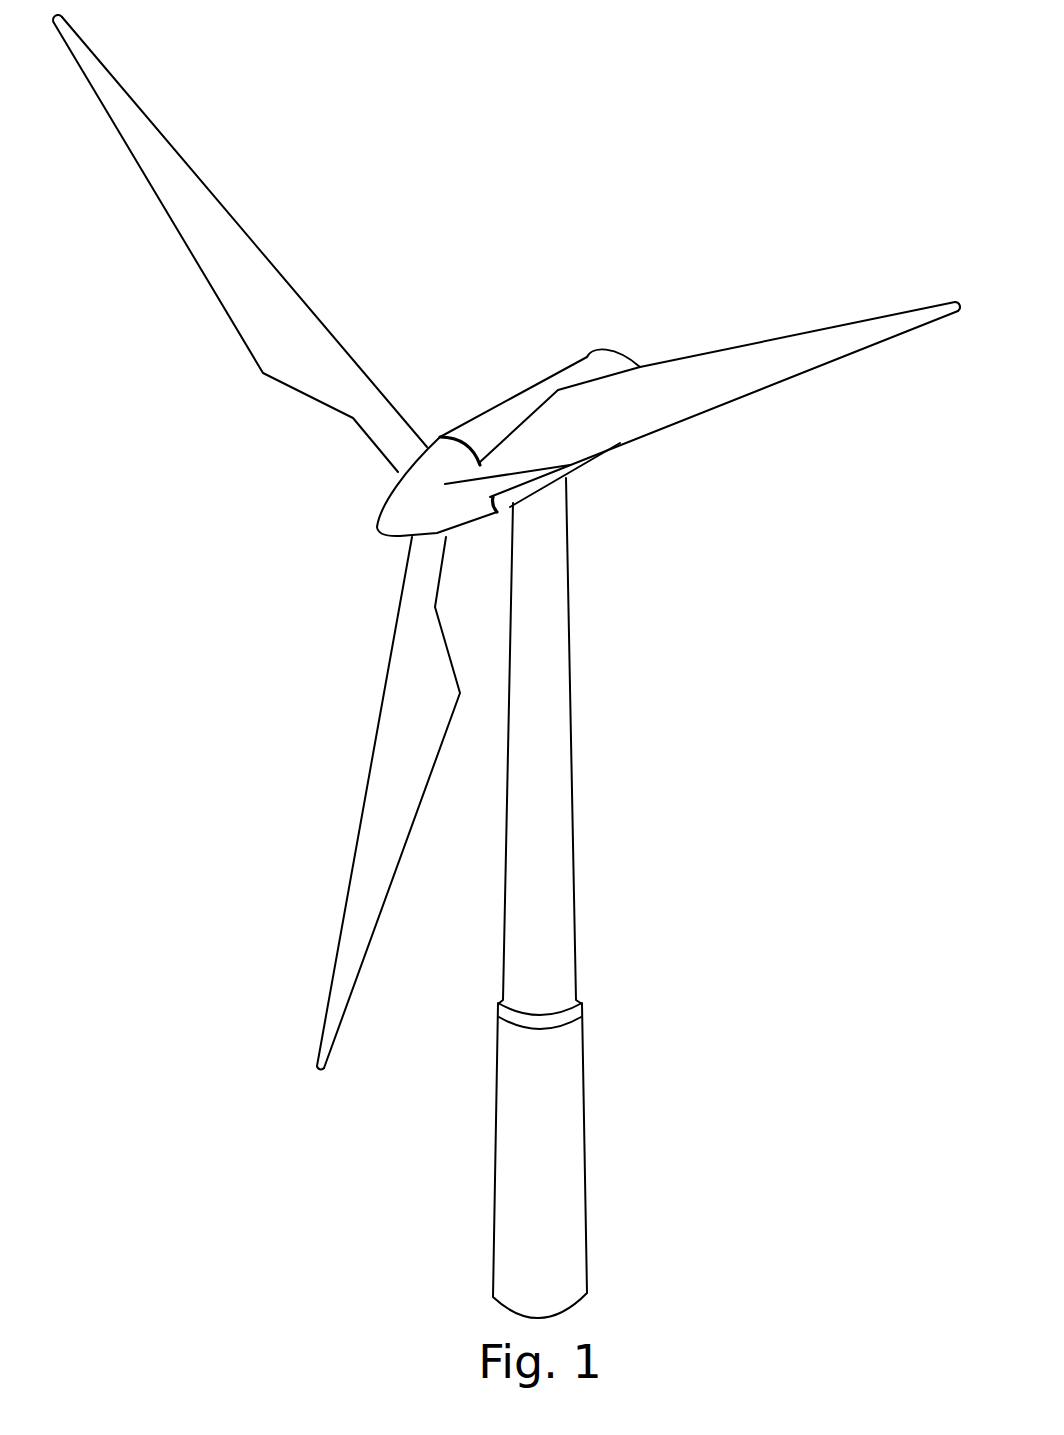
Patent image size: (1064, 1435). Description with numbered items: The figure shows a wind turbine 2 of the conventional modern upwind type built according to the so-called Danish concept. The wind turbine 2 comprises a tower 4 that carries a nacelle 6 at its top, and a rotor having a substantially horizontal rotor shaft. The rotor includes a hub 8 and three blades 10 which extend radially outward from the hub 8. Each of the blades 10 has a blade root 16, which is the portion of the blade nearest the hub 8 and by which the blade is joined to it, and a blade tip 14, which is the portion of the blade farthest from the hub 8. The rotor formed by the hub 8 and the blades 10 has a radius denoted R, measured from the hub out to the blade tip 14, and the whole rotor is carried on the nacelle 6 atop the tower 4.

The wind turbine 2 is at (650, 880).
The tower 4 is at (547, 747).
The nacelle 6 is at (487, 432).
The hub 8 is at (377, 528).
The blades 10 is at (260, 343).
The blade tip 14 is at (92, 61).
The blade root 16 is at (450, 484).